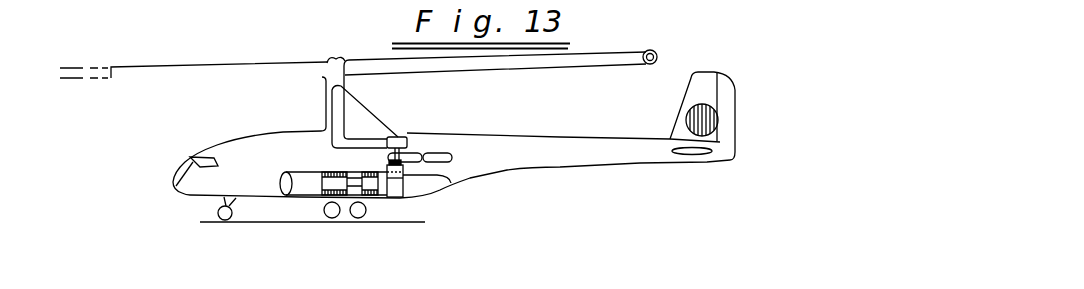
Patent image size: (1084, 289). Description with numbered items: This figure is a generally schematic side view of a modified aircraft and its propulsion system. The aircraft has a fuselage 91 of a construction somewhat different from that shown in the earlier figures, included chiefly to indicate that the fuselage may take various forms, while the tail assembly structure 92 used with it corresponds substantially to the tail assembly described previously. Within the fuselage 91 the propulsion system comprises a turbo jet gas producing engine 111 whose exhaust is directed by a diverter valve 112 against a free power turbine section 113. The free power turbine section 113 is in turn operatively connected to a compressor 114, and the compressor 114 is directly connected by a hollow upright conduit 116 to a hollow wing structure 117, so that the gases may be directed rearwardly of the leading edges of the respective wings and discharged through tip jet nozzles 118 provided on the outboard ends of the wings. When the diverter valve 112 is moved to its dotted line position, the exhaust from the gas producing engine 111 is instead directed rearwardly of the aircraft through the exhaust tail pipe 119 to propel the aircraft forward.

The hollow wing structure 117 is at (298, 68).
The tip jet nozzle 118 is at (658, 53).
The hollow upright conduit 116 is at (332, 117).
The compressor 114 is at (400, 137).
The free power turbine section 113 is at (400, 158).
The diverter valve 112 is at (403, 185).
The turbo jet gas producing engine 111 is at (323, 192).
The aircraft fuselage 91 is at (508, 147).
The exhaust tail pipe 119 is at (447, 183).
The tail assembly structure 92 is at (708, 162).